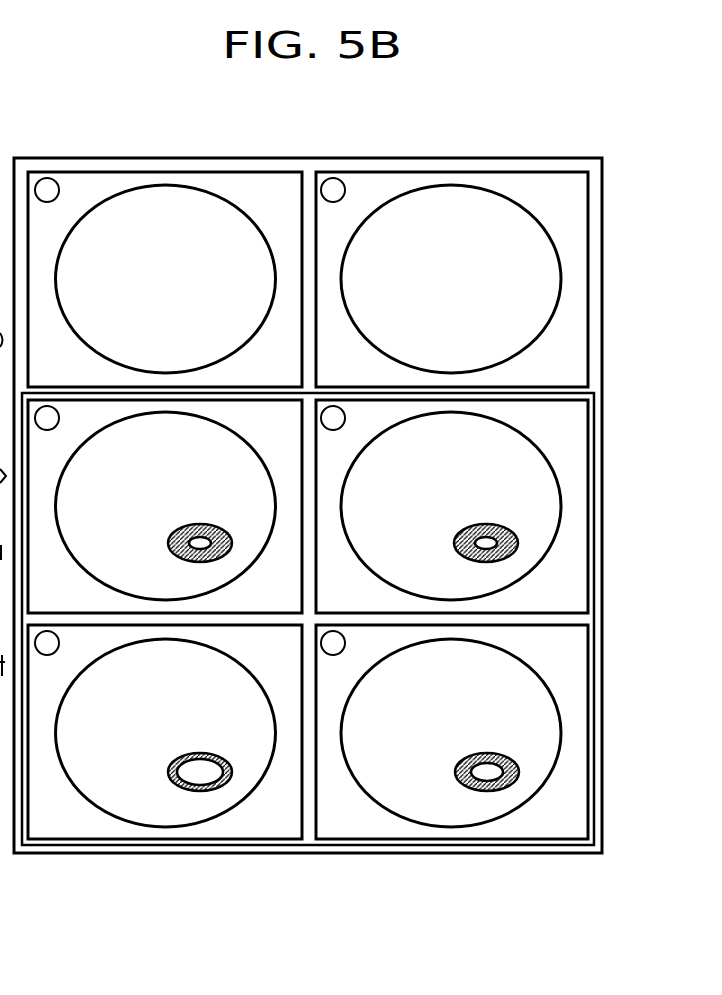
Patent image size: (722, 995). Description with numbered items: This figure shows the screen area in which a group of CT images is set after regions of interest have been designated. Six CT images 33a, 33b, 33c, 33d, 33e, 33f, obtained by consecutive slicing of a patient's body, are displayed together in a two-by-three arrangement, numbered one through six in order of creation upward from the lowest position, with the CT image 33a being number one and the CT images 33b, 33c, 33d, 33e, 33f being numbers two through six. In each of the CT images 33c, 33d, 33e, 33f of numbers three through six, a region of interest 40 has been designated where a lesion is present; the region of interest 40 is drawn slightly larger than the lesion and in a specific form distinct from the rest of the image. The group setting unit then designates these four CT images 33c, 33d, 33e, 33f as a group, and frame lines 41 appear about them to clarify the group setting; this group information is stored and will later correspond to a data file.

The CT image 33a is at (245, 182).
The CT image 33b is at (574, 350).
The CT image 33c is at (265, 419).
The CT image 33d is at (569, 572).
The CT image 33e is at (279, 823).
The CT image 33f is at (574, 666).
The region of interest 40 is at (201, 525).
The frame lines 41 is at (438, 845).